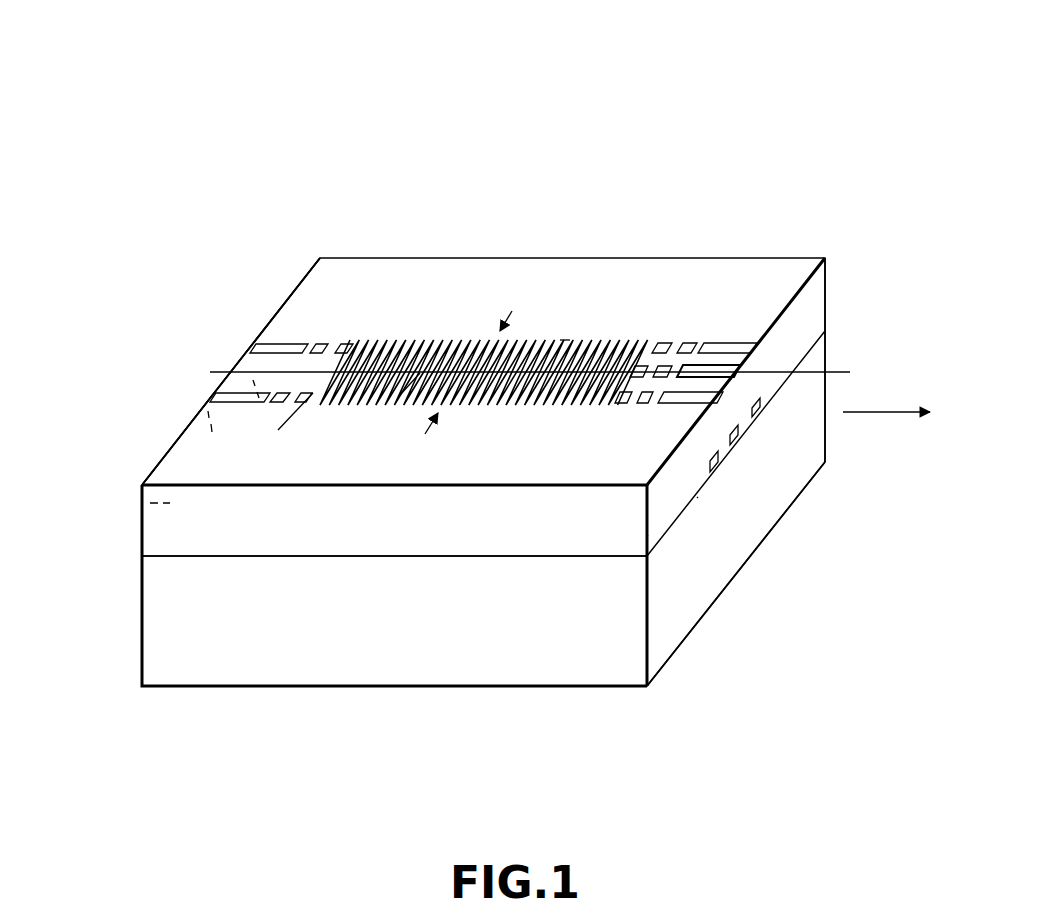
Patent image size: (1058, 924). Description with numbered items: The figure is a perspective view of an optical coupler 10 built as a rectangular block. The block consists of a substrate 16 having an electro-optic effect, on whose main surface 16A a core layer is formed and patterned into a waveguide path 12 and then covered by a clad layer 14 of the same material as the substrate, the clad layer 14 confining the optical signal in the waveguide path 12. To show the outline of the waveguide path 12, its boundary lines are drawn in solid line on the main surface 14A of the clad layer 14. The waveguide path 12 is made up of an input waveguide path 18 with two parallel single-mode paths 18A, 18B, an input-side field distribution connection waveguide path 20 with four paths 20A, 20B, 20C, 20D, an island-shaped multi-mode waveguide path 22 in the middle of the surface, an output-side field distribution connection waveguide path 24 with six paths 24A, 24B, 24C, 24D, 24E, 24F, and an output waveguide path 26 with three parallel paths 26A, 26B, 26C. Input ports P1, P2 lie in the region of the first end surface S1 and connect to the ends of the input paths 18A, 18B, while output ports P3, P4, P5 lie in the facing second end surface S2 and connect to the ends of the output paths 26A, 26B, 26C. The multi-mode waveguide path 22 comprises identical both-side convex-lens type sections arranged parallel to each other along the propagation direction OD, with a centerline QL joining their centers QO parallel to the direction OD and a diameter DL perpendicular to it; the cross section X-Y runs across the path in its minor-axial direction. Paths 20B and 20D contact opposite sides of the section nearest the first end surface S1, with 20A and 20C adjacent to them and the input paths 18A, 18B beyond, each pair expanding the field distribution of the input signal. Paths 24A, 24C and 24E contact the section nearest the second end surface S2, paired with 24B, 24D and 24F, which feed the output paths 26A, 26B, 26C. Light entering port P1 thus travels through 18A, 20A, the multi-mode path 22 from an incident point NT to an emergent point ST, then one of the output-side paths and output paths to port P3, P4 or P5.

The optical coupler 10 is at (838, 69).
The waveguide path 12 is at (828, 131).
The clad layer 14 is at (800, 319).
The main surface of clad layer 14A is at (171, 446).
The substrate 16 is at (678, 615).
The main surface of substrate 16A is at (522, 556).
The input waveguide path 18 is at (283, 186).
The input waveguide path 18A is at (275, 343).
The input waveguide path 18B is at (230, 393).
The input-side field distribution connection waveguide path 20 is at (483, 184).
The input-side field distribution connection waveguide path 20A is at (343, 343).
The input-side field distribution connection waveguide path 20B is at (313, 393).
The input-side field distribution connection waveguide path 20C is at (320, 343).
The input-side field distribution connection waveguide path 20D is at (465, 336).
The multi-mode waveguide path 22 is at (466, 334).
The output-side field distribution connection waveguide path 24 is at (730, 188).
The output-side field distribution connection waveguide path 24A is at (662, 342).
The output-side field distribution connection waveguide path 24B is at (686, 342).
The output-side field distribution connection waveguide path 24C is at (640, 368).
The output-side field distribution connection waveguide path 24D is at (662, 365).
The output-side field distribution connection waveguide path 24E is at (563, 337).
The output-side field distribution connection waveguide path 24F is at (684, 393).
The output waveguide path 26 is at (857, 188).
The output waveguide path 26A is at (720, 393).
The output waveguide path 26B is at (752, 343).
The output waveguide path 26C is at (738, 365).
The input port P1 is at (252, 373).
The input port P2 is at (208, 405).
The output port P3 is at (760, 408).
The output port P4 is at (738, 434).
The output port P5 is at (718, 460).
The first end surface S1 is at (142, 500).
The second end surface S2 is at (830, 290).
The incident point NT is at (278, 430).
The center of convex-lens type waveguide path QO is at (400, 395).
The centerline QL is at (554, 374).
The propagation direction OD is at (886, 430).
The emergent point ST is at (648, 397).
The diameter DL is at (560, 397).
The cross section X-Y X is at (563, 338).
The cross section X- Y is at (515, 405).